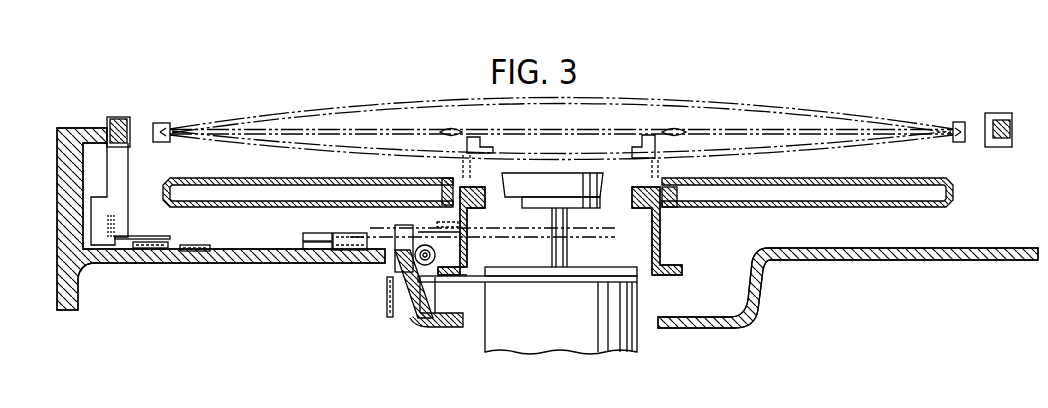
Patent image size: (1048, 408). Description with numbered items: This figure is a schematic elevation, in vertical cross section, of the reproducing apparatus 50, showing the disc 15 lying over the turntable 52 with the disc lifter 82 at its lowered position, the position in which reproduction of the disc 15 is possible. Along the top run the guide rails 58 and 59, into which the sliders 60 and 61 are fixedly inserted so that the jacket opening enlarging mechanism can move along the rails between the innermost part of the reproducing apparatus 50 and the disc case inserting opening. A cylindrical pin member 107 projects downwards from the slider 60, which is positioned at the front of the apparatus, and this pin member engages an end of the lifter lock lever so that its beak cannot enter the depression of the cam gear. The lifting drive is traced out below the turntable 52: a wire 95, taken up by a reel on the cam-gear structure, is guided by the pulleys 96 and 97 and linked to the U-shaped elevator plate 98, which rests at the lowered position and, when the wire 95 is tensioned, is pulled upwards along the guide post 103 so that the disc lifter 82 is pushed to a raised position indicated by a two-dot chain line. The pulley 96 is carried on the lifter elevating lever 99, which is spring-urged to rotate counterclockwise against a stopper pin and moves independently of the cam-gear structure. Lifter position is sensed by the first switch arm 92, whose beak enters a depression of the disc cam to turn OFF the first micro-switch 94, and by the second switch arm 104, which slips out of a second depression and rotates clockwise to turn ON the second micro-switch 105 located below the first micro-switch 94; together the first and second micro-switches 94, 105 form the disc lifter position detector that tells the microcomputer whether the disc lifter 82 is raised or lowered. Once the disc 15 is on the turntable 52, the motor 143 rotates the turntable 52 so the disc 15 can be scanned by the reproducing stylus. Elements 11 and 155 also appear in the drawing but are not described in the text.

The flexible band 11 is at (413, 104).
The disc 15 is at (303, 186).
The reproducing apparatus 50 is at (764, 86).
The turntable 52 is at (876, 200).
The guide rail 58 is at (106, 128).
The guide rail 59 is at (1011, 130).
The slider 60 is at (131, 126).
The slider 61 is at (1000, 112).
The disc lifter 82 is at (665, 158).
The first switch arm 92 is at (312, 236).
The first micro-switch 94 is at (360, 236).
The wire 95 is at (240, 249).
The pulley 96 is at (185, 253).
The pulley 97 is at (436, 252).
The elevator plate 98 is at (585, 236).
The lifter elevating lever 99 is at (150, 244).
The guide post 103 is at (397, 233).
The second switch arm 104 is at (320, 253).
The second micro-switch 105 is at (362, 253).
The cylindrical pin member 107 is at (115, 236).
The motor 143 is at (630, 335).
The panel 155 is at (254, 167).